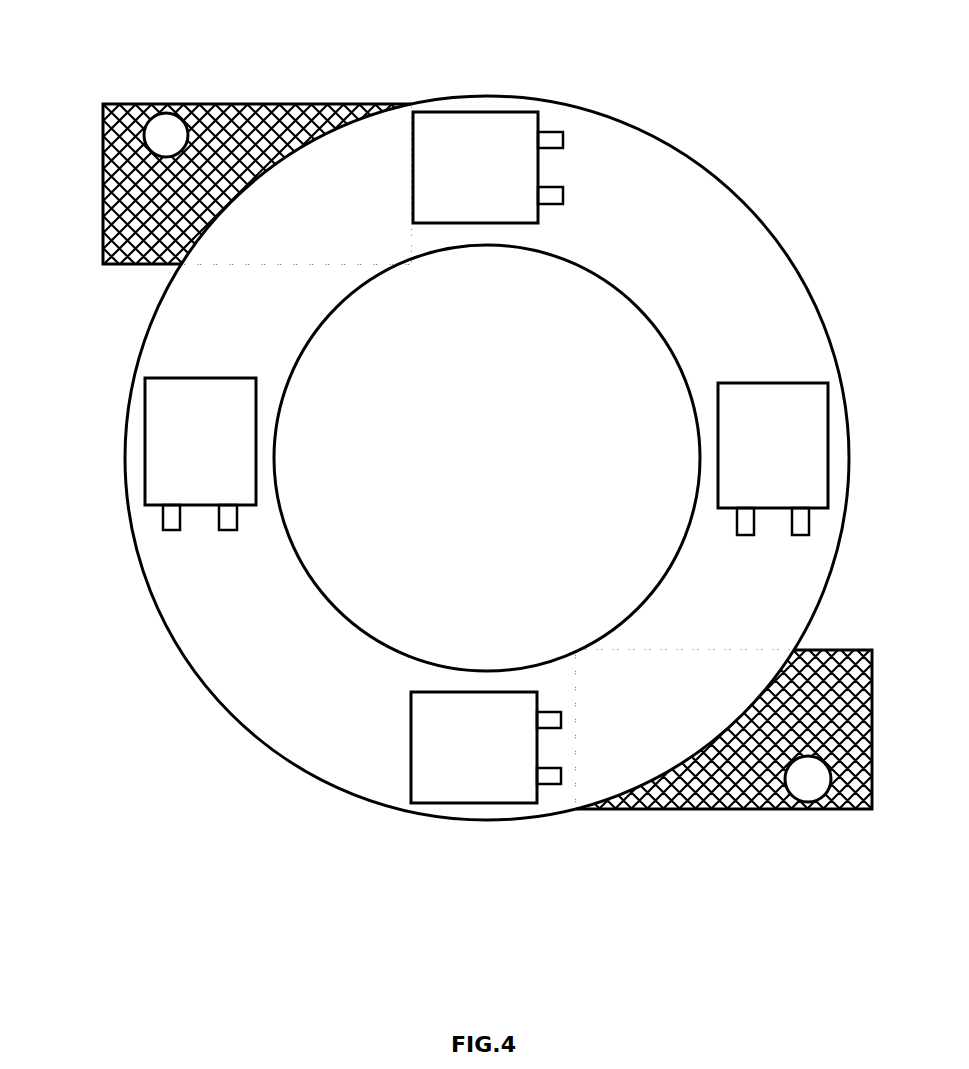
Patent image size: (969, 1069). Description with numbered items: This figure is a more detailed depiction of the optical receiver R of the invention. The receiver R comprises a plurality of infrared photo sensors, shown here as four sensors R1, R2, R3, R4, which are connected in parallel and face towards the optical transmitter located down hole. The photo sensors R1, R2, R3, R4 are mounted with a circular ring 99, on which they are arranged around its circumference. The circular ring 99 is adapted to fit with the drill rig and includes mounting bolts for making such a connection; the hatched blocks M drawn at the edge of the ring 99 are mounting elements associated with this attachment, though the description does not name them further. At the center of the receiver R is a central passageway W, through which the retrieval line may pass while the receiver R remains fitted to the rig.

The circular ring 99 is at (137, 365).
The central passageway W is at (492, 457).
The mounting block M is at (102, 143).
The infrared photo sensor R1 is at (478, 112).
The infrared photo sensor R2 is at (146, 440).
The infrared photo sensor R3 is at (411, 748).
The infrared photo sensor R4 is at (829, 445).
The optical receiver R is at (202, 785).